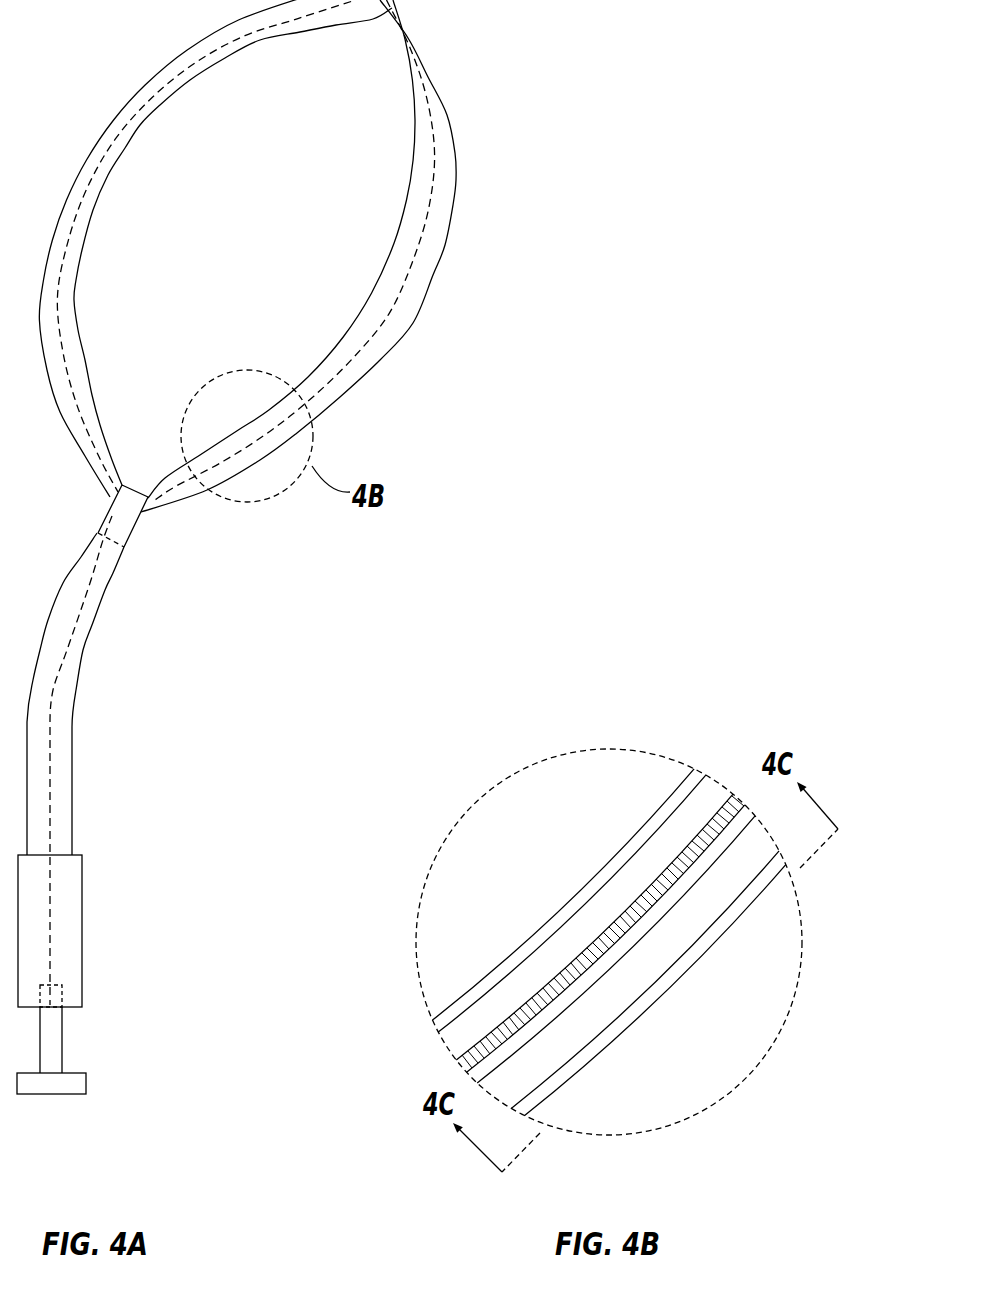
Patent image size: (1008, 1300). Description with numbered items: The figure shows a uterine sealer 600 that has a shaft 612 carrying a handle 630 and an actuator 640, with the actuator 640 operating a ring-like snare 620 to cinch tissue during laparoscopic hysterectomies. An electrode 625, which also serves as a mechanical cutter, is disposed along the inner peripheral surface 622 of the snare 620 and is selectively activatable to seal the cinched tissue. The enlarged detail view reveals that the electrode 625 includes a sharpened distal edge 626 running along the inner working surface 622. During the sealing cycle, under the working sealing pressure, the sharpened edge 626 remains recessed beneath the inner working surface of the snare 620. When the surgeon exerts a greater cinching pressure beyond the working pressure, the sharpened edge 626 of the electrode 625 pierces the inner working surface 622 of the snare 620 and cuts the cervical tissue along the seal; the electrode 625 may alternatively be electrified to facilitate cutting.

In FIG. 4A, the uterine sealer 600 is at (527, 106).
In FIG. 4A, the snare 620 is at (158, 50).
In FIG. 4A, the inner peripheral surface 622 is at (134, 136).
In FIG. 4B, the inner peripheral surface 622 is at (662, 842).
In FIG. 4A, the electrode 625 is at (434, 238).
In FIG. 4B, the electrode 625 is at (598, 988).
In FIG. 4B, the sharpened distal edge 626 is at (627, 920).
In FIG. 4A, the shaft 612 is at (64, 752).
In FIG. 4A, the handle 630 is at (84, 946).
In FIG. 4A, the actuator 640 is at (88, 1083).